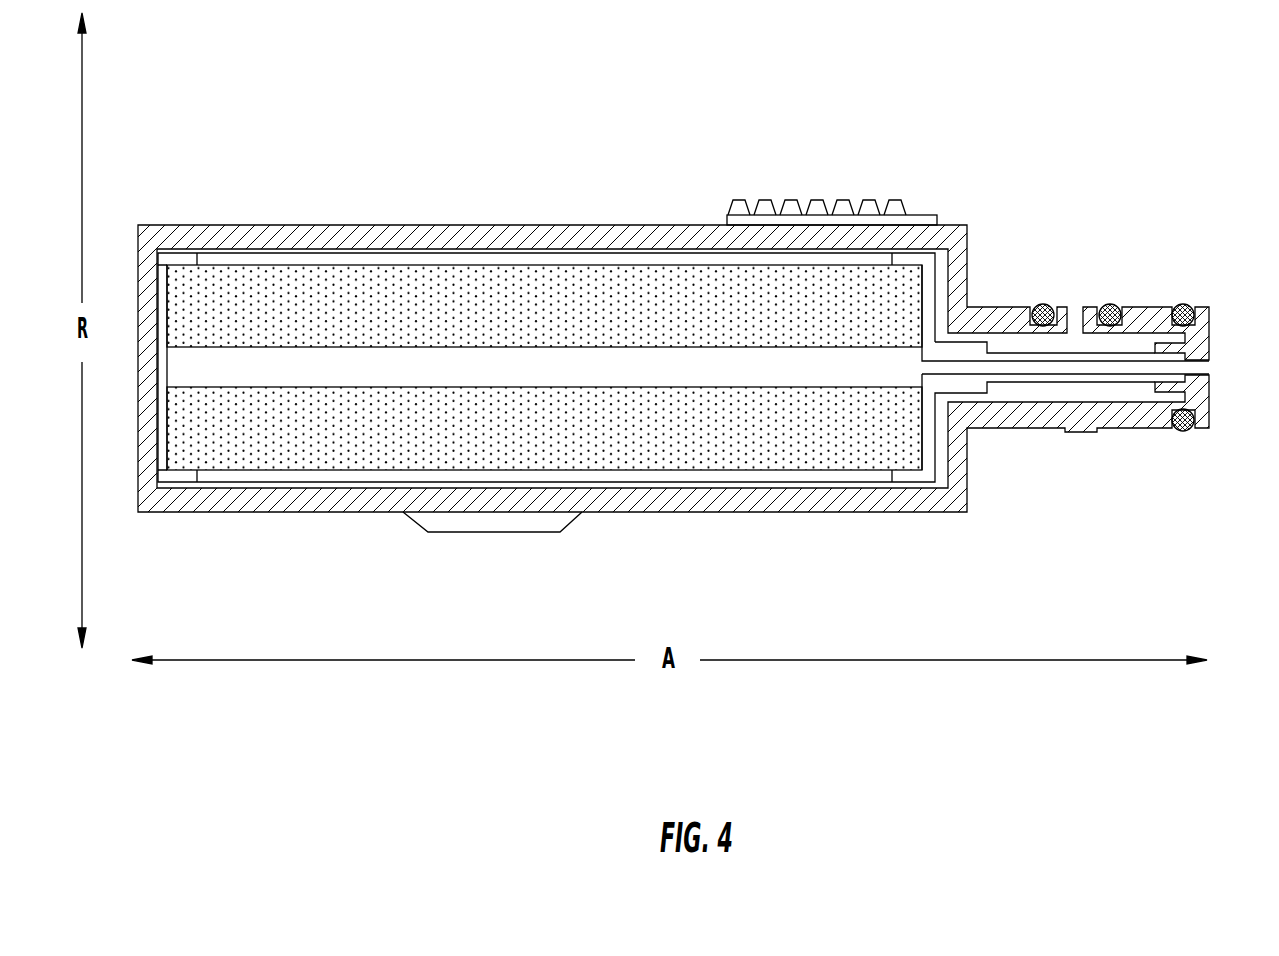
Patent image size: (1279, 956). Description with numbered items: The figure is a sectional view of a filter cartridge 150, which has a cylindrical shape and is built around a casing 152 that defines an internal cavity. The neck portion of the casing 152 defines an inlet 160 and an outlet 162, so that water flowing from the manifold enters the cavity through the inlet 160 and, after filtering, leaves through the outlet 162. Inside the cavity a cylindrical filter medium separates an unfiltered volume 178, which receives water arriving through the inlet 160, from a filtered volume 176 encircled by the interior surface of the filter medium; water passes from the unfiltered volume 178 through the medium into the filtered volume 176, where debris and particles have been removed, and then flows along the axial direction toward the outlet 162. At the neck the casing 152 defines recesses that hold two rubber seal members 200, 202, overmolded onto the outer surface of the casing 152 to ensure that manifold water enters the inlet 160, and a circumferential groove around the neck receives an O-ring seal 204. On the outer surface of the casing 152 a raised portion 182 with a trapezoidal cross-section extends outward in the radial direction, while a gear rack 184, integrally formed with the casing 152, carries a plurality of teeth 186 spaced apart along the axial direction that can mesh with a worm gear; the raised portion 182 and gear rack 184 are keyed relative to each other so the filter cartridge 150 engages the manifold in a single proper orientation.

The filter cartridge 150 is at (192, 177).
The casing 152 is at (955, 512).
The inlet 160 is at (1079, 312).
The outlet 162 is at (1205, 367).
The filtered volume 176 is at (535, 380).
The unfiltered volume 178 is at (510, 256).
The raised portion 182 is at (525, 532).
The gear rack 184 is at (937, 215).
The teeth 186 is at (737, 200).
The seal member 200 is at (1043, 305).
The seal member 202 is at (1109, 305).
The O-ring seal 204 is at (1183, 305).